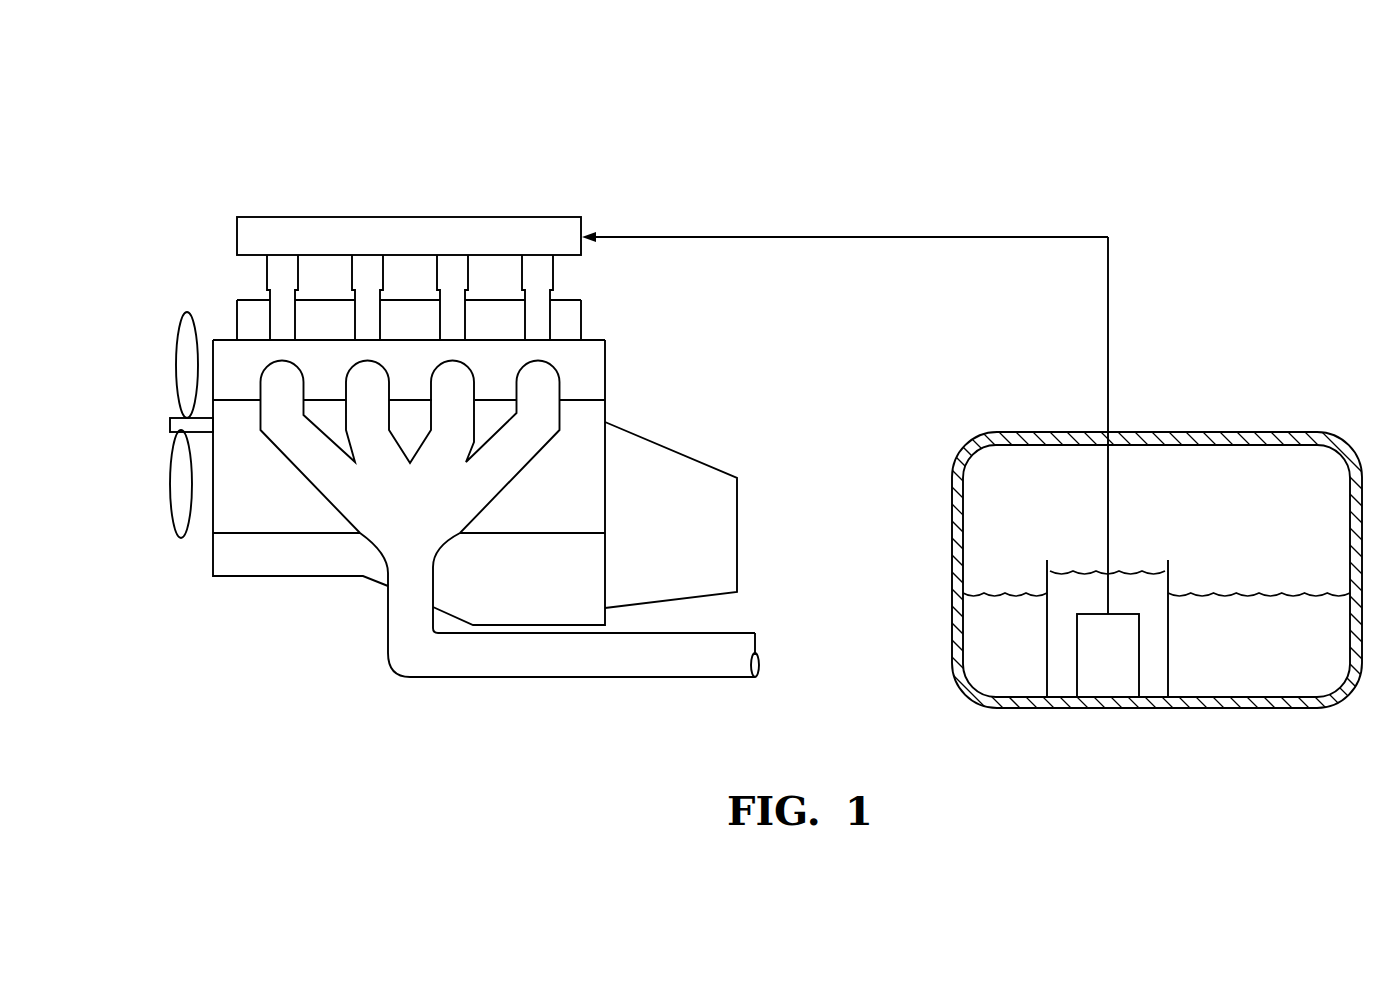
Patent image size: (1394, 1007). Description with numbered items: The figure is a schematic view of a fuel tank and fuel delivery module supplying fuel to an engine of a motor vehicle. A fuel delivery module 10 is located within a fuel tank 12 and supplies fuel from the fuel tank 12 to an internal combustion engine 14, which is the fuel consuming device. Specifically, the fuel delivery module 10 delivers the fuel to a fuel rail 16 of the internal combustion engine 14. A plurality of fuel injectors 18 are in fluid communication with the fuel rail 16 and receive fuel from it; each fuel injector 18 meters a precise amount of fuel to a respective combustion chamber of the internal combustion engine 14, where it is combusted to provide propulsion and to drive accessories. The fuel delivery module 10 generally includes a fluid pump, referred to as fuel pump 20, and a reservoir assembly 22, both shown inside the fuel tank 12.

The fuel delivery module 10 is at (1032, 662).
The fuel tank 12 is at (412, 132).
The internal combustion engine 14 is at (227, 517).
The fuel rail 16 is at (340, 217).
The fuel injectors 18 is at (370, 297).
The fuel pump 20 is at (1138, 675).
The reservoir assembly 22 is at (1168, 642).